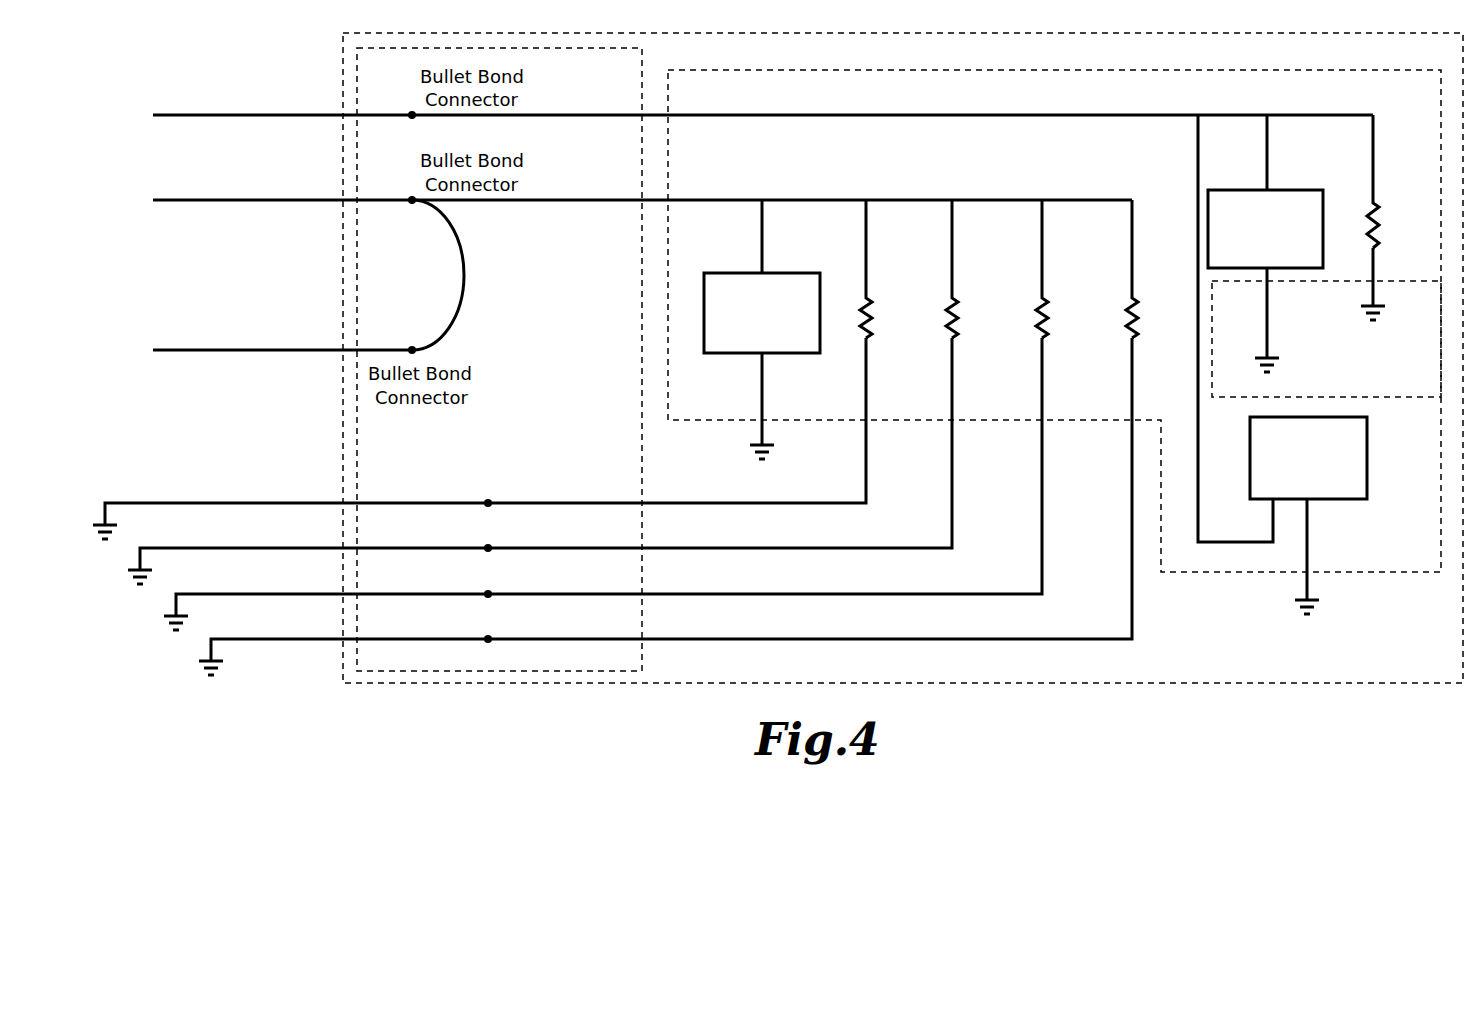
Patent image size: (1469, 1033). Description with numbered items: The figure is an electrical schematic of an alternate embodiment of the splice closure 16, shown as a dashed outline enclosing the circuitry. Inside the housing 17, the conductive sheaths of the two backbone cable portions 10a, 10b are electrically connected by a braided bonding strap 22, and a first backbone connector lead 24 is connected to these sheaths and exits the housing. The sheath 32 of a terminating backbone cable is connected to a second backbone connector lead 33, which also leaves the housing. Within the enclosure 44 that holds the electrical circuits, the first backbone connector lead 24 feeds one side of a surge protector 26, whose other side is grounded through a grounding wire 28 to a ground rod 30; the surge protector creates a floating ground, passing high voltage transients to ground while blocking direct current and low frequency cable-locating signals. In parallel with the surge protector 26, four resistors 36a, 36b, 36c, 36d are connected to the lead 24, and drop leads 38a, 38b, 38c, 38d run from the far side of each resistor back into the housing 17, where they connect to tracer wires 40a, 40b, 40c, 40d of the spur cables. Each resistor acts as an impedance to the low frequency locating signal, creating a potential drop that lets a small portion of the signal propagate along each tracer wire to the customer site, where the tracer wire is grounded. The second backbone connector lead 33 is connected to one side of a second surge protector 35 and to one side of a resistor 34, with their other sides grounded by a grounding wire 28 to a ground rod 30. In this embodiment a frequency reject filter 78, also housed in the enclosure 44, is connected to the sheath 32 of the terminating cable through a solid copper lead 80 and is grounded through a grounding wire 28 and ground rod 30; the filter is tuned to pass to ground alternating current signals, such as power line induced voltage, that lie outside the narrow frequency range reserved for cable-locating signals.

The splice closure 16 is at (1003, 33).
The housing 17 is at (645, 652).
The enclosure 44 is at (915, 70).
The sheath of terminating backbone cable 32 is at (185, 117).
The second backbone connector lead 33 is at (830, 117).
The backbone cable portion 10a is at (185, 352).
The backbone cable portion 10b is at (185, 202).
The braided bonding strap 22 is at (450, 318).
The first backbone connector lead 24 is at (915, 200).
The surge protector 26 is at (785, 273).
The grounding wire 28 is at (762, 362).
The ground rod 30 is at (772, 453).
The resistor 34 is at (1368, 229).
The second surge protector 35 is at (1287, 190).
The resistor 36a is at (872, 318).
The resistor 36b is at (958, 318).
The resistor 36c is at (1048, 318).
The resistor 36d is at (1138, 318).
The drop lead 38a is at (866, 440).
The drop lead 38b is at (952, 465).
The drop lead 38c is at (1042, 483).
The drop lead 38d is at (1131, 537).
The tracer wire 40a is at (372, 503).
The tracer wire 40b is at (372, 548).
The tracer wire 40c is at (372, 594).
The tracer wire 40d is at (372, 639).
The frequency reject filter 78 is at (1250, 450).
The solid copper lead 80 is at (1198, 128).